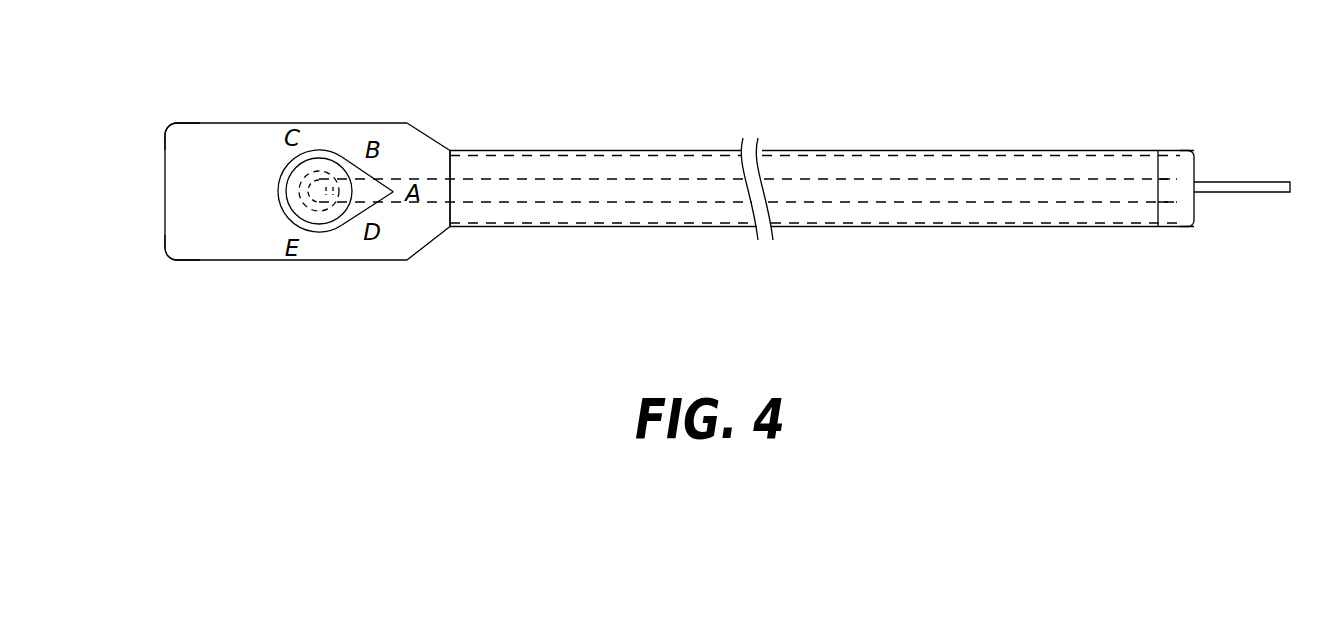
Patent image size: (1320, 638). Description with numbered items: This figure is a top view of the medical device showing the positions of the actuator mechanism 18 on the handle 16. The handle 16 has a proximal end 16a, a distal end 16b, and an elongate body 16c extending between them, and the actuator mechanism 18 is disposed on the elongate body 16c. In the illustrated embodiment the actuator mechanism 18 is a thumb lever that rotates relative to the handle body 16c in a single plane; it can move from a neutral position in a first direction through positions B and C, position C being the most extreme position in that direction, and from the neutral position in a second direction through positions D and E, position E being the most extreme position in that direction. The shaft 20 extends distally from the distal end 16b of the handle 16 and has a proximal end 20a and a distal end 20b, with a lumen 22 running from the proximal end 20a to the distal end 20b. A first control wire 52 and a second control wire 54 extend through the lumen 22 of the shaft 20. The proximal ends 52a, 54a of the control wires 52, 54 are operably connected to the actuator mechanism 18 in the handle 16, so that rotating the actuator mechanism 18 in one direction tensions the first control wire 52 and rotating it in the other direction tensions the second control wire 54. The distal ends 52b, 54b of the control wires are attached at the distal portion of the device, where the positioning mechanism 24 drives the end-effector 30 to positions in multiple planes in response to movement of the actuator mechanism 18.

The handle 16 is at (305, 260).
The proximal end of handle 16a is at (172, 124).
The distal end of handle 16b is at (452, 230).
The elongate body of handle 16c is at (195, 250).
The actuator mechanism 18 is at (284, 203).
The shaft 20 is at (858, 150).
The proximal end of shaft 20a is at (450, 150).
The distal end of shaft 20b is at (1173, 227).
The lumen 22 is at (512, 160).
The positioning mechanism 24 is at (1188, 148).
The end-effector 30 is at (1258, 190).
The first control wire 52 is at (605, 177).
The proximal end of first control wire 52a is at (328, 170).
The distal end of first control wire 52b is at (1173, 177).
The second control wire 54 is at (608, 207).
The proximal end of second control wire 54a is at (328, 210).
The distal end of second control wire 54b is at (1173, 200).